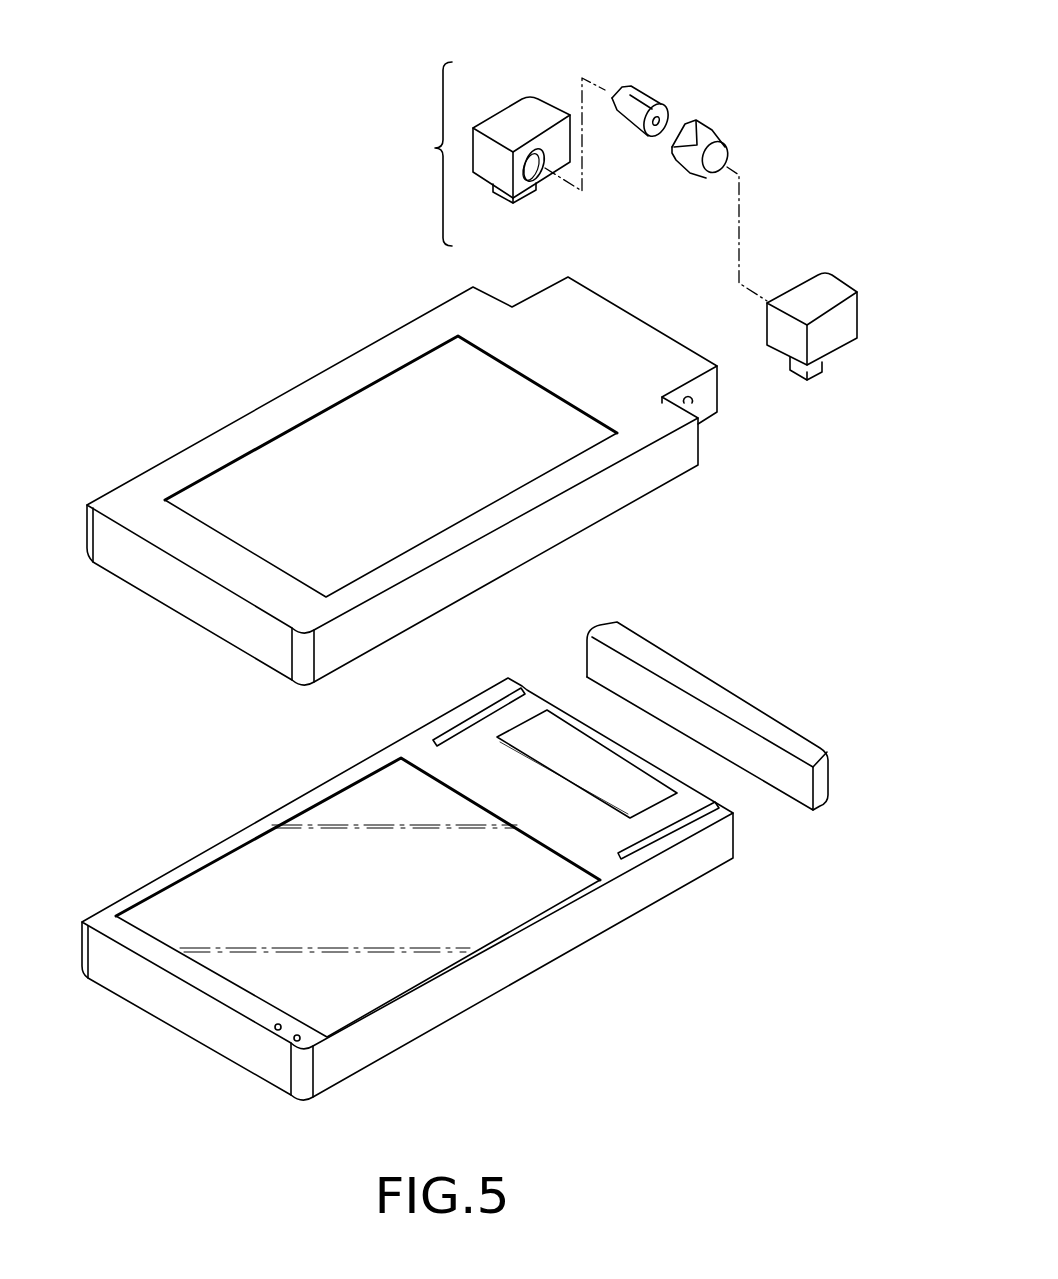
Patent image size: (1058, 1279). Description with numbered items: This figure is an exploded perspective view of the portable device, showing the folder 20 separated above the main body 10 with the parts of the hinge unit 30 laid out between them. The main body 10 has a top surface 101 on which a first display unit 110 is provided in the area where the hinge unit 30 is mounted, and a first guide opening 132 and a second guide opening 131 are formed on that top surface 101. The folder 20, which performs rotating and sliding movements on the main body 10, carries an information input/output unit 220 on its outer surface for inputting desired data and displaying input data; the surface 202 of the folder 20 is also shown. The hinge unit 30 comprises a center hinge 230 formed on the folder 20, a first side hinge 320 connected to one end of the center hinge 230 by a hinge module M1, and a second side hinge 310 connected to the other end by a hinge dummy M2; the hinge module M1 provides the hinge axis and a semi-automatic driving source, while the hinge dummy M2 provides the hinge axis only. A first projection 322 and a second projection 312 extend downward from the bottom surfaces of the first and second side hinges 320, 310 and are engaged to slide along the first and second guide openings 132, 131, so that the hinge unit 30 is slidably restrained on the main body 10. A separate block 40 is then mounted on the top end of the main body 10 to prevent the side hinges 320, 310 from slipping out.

The main body 10 is at (437, 849).
The folder 20 is at (419, 481).
The hinge unit 30 is at (648, 216).
The block 40 is at (704, 684).
The top surface 101 is at (612, 863).
The first display unit 110 is at (552, 728).
The second guide opening 131 is at (680, 821).
The first guide opening 132 is at (460, 728).
The surface of second body 202 is at (145, 528).
The information input/output unit 220 is at (327, 433).
The center hinge 230 is at (708, 389).
The second side hinge 310 is at (823, 315).
The second projection 312 is at (818, 370).
The first side hinge 320 is at (534, 129).
The first projection 322 is at (528, 198).
The hinge module M1 is at (645, 98).
The hinge dummy M2 is at (714, 132).